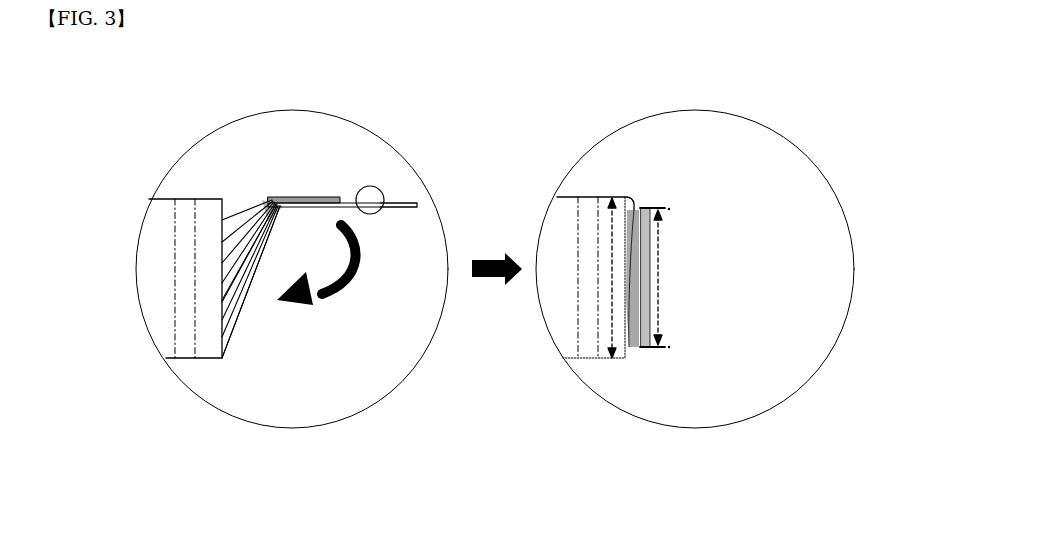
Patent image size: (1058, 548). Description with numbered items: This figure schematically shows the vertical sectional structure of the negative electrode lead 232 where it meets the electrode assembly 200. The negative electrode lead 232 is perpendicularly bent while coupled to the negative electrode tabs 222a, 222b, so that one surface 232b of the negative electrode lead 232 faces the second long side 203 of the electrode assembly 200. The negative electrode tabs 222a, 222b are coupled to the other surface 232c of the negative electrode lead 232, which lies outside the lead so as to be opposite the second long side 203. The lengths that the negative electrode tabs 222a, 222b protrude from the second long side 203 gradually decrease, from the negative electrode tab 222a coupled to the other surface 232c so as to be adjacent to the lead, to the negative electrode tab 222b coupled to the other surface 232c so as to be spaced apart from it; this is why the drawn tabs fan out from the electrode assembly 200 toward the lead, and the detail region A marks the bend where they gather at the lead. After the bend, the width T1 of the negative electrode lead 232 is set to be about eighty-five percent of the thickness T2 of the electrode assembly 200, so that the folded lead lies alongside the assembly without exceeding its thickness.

The electrode assembly 200 is at (153, 319).
The second long side 203 is at (262, 316).
The negative electrode tab 222a is at (235, 332).
The negative electrode tab 222b is at (252, 197).
The negative electrode lead 232 is at (417, 203).
The one surface of the negative electrode lead 232b is at (410, 226).
The other surface of the negative electrode lead 232c is at (400, 180).
The detail region A is at (363, 187).
The width of the negative electrode lead T1 is at (660, 247).
The thickness of the electrode assembly T2 is at (610, 237).